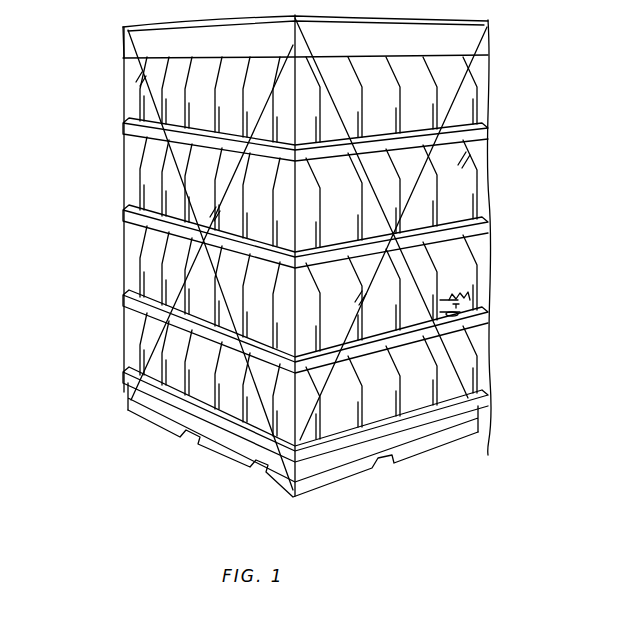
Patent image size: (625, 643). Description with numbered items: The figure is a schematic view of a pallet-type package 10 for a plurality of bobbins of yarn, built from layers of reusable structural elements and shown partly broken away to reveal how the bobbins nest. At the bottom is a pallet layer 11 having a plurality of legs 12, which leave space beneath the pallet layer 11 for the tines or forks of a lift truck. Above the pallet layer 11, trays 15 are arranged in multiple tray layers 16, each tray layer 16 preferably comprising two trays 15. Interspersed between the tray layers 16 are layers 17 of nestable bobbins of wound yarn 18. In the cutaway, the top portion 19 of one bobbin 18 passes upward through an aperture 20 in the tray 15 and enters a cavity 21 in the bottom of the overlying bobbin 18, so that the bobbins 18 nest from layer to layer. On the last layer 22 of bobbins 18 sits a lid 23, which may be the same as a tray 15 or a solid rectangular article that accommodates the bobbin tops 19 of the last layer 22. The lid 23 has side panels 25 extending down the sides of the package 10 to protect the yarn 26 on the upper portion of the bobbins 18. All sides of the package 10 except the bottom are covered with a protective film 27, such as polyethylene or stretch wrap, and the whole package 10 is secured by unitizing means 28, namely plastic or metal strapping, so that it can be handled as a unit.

The pallet-type package 10 is at (100, 180).
The pallet layer 11 is at (427, 437).
The legs 12 is at (138, 436).
The tray 15 is at (127, 393).
The tray layer 16 is at (127, 337).
The layer of nestable bobbins of wound yarn 17 is at (120, 214).
The nestable bobbin of wound yarn 18 is at (447, 173).
The top portion of bobbin 19 is at (467, 308).
The aperture 20 is at (457, 300).
The cavity 21 is at (466, 298).
The last layer of bobbins of yarn 22 is at (120, 58).
The lid 23 is at (124, 28).
The side panels 25 is at (455, 42).
The yarn 26 is at (460, 274).
The protective film 27 is at (123, 146).
The unitizing means 28 is at (452, 88).